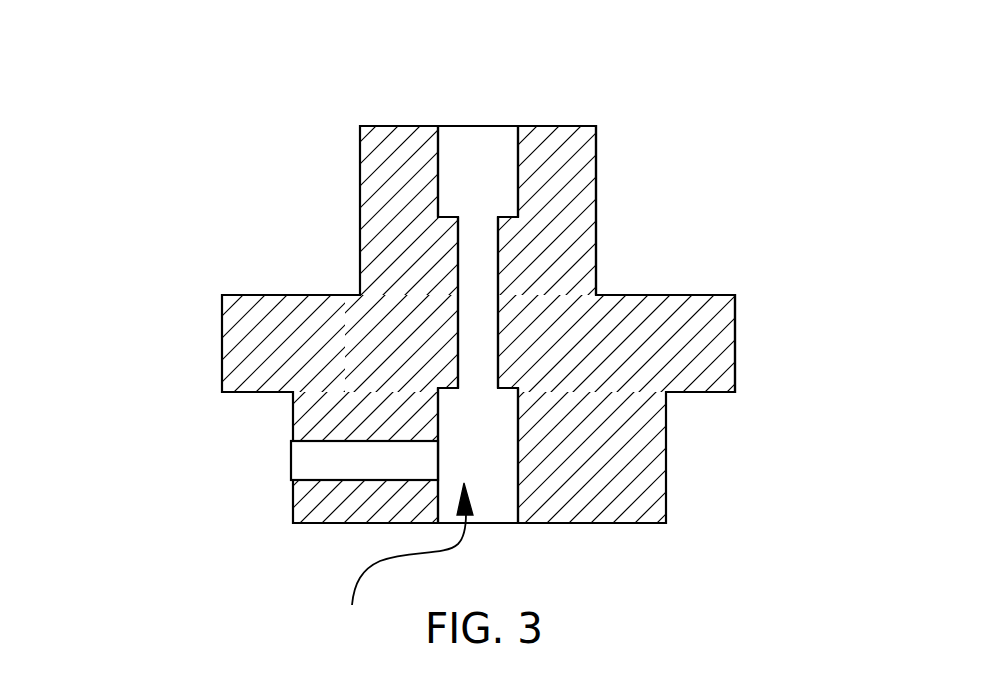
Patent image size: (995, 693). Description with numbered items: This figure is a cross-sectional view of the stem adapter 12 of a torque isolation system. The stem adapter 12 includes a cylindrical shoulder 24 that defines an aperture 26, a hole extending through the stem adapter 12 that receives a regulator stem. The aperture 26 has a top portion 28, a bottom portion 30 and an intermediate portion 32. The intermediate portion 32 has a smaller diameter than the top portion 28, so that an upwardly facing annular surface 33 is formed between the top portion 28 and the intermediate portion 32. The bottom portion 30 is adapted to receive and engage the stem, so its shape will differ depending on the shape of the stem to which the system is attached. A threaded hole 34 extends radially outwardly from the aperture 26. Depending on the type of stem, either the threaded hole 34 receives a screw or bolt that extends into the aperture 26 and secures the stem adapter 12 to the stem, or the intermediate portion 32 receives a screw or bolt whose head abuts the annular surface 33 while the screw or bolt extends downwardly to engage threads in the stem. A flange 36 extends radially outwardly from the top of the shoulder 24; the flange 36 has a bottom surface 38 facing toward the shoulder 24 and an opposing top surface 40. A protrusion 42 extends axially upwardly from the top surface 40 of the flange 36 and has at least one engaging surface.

The stem adapter 12 is at (164, 213).
The cylindrical shoulder 24 is at (625, 493).
The aperture 26 is at (402, 561).
The top portion 28 is at (457, 154).
The bottom portion 30 is at (482, 490).
The intermediate portion 32 is at (483, 277).
The annular surface 33 is at (505, 217).
The threaded hole 34 is at (353, 463).
The flange 36 is at (690, 342).
The bottom surface 38 is at (710, 393).
The top surface 40 is at (712, 294).
The protrusion 42 is at (570, 142).